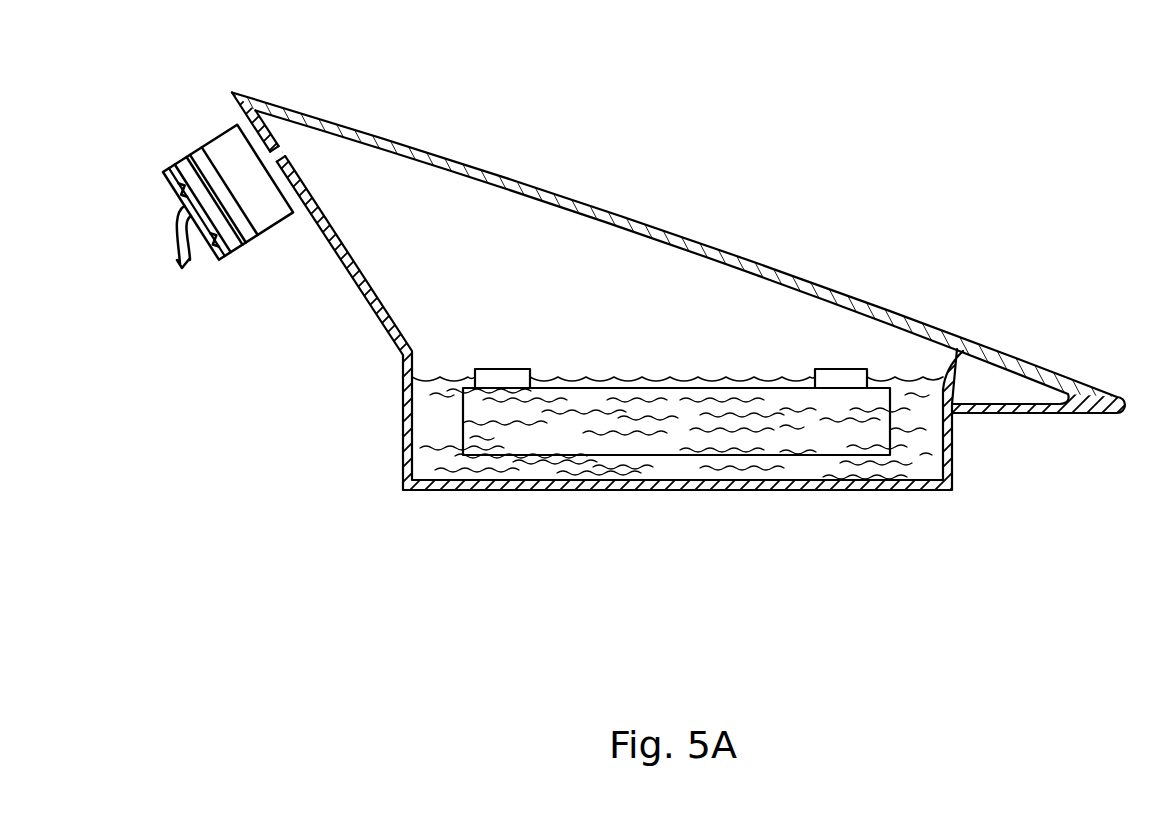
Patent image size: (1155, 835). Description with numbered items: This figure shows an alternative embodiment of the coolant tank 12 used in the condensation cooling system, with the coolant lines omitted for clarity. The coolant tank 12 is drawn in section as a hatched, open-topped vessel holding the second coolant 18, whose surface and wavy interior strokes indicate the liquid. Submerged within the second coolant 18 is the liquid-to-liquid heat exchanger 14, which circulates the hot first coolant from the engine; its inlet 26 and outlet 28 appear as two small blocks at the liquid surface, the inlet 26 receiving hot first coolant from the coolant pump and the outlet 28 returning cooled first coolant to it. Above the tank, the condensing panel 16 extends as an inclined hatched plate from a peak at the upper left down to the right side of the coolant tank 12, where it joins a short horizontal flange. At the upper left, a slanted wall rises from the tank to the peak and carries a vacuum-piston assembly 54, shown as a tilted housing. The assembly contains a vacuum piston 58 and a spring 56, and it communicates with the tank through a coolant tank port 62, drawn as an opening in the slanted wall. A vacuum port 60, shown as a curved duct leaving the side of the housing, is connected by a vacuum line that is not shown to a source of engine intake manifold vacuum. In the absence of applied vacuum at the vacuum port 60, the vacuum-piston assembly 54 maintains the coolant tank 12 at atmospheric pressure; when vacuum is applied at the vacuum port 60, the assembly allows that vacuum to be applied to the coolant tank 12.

The coolant tank 12 is at (935, 493).
The liquid-to-liquid heat exchanger 14 is at (811, 458).
The condensing panel 16 is at (694, 243).
The second coolant 18 is at (915, 412).
The inlet 26 is at (497, 368).
The outlet 28 is at (842, 368).
The vacuum-piston assembly 54 is at (280, 232).
The spring 56 is at (168, 174).
The vacuum piston 58 is at (210, 152).
The vacuum port 60 is at (178, 242).
The coolant tank port 62 is at (275, 168).